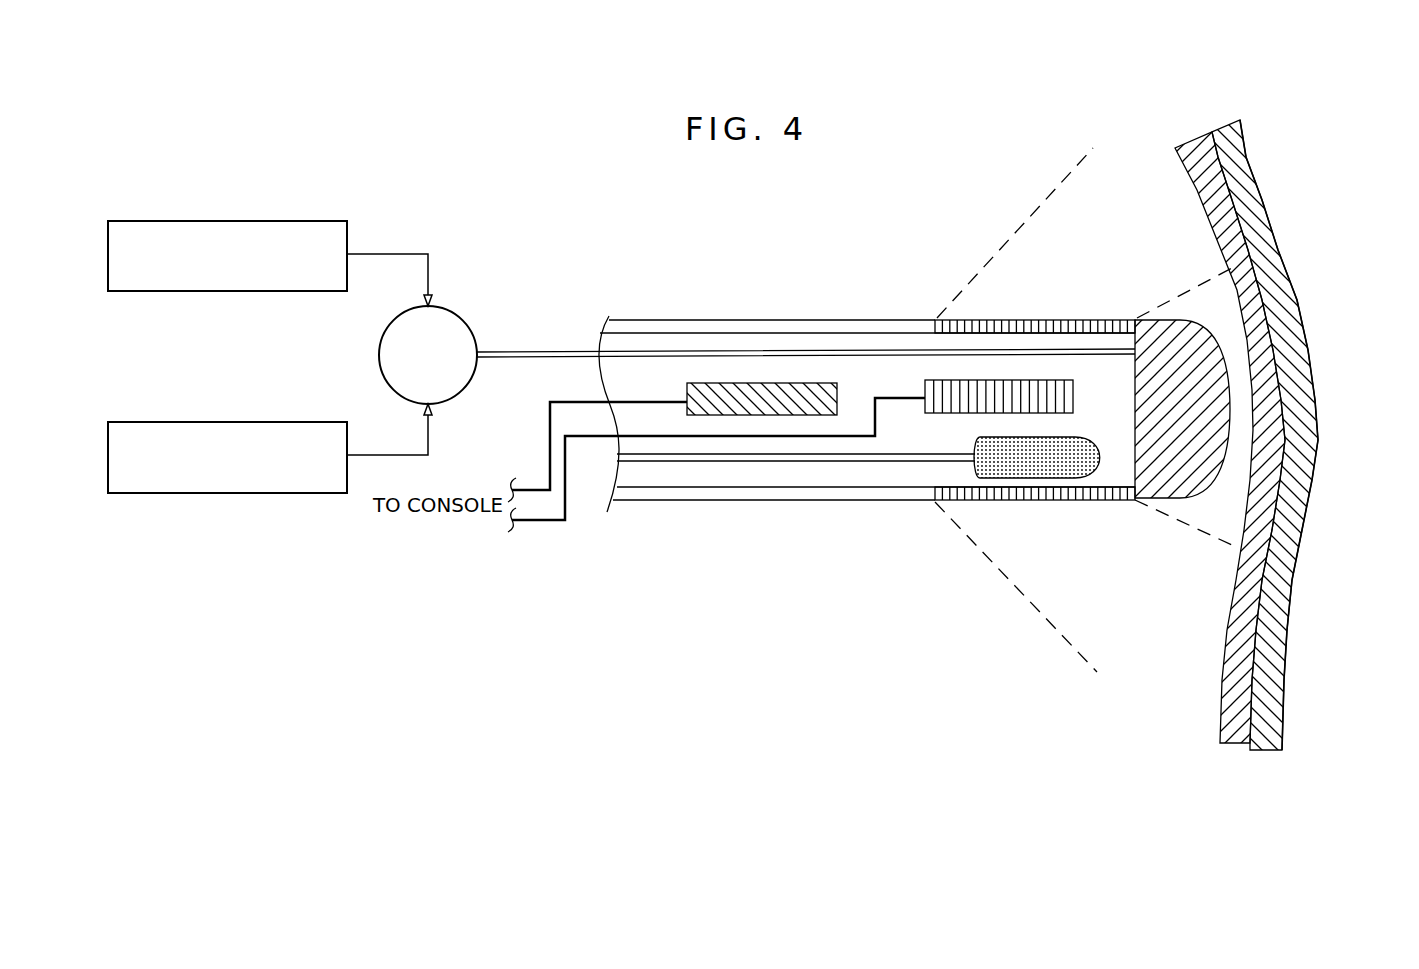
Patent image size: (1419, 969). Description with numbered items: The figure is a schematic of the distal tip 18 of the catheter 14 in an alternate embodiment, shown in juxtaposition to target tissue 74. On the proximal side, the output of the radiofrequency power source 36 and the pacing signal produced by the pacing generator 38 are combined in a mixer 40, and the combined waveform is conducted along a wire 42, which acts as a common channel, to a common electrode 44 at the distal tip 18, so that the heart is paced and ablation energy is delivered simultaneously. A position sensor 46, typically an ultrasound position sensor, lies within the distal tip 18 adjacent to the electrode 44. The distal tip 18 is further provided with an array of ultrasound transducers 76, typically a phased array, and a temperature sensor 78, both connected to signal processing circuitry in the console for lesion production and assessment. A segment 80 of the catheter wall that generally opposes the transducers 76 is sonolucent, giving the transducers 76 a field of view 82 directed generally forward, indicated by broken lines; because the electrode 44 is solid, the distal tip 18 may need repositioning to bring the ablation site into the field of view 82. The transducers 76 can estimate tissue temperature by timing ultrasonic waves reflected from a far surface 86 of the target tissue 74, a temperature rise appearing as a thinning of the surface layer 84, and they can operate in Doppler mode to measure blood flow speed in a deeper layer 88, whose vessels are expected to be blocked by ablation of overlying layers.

The catheter 14 is at (1029, 149).
The distal tip 18 is at (765, 503).
The radiofrequency power source 36 is at (205, 221).
The pacing generator 38 is at (205, 422).
The mixer 40 is at (381, 367).
The wire 42 is at (497, 352).
The common electrode 44 is at (1135, 398).
The position sensor 46 is at (1025, 468).
The target tissue 74 is at (1279, 463).
The ultrasound transducers 76 is at (932, 380).
The temperature sensor 78 is at (713, 383).
The segment of the wall of the catheter 80 is at (1086, 320).
The field of view 82 is at (1040, 206).
The surface layer 84 is at (1232, 746).
The far surface 86 is at (1316, 388).
The deeper layer 88 is at (1264, 752).